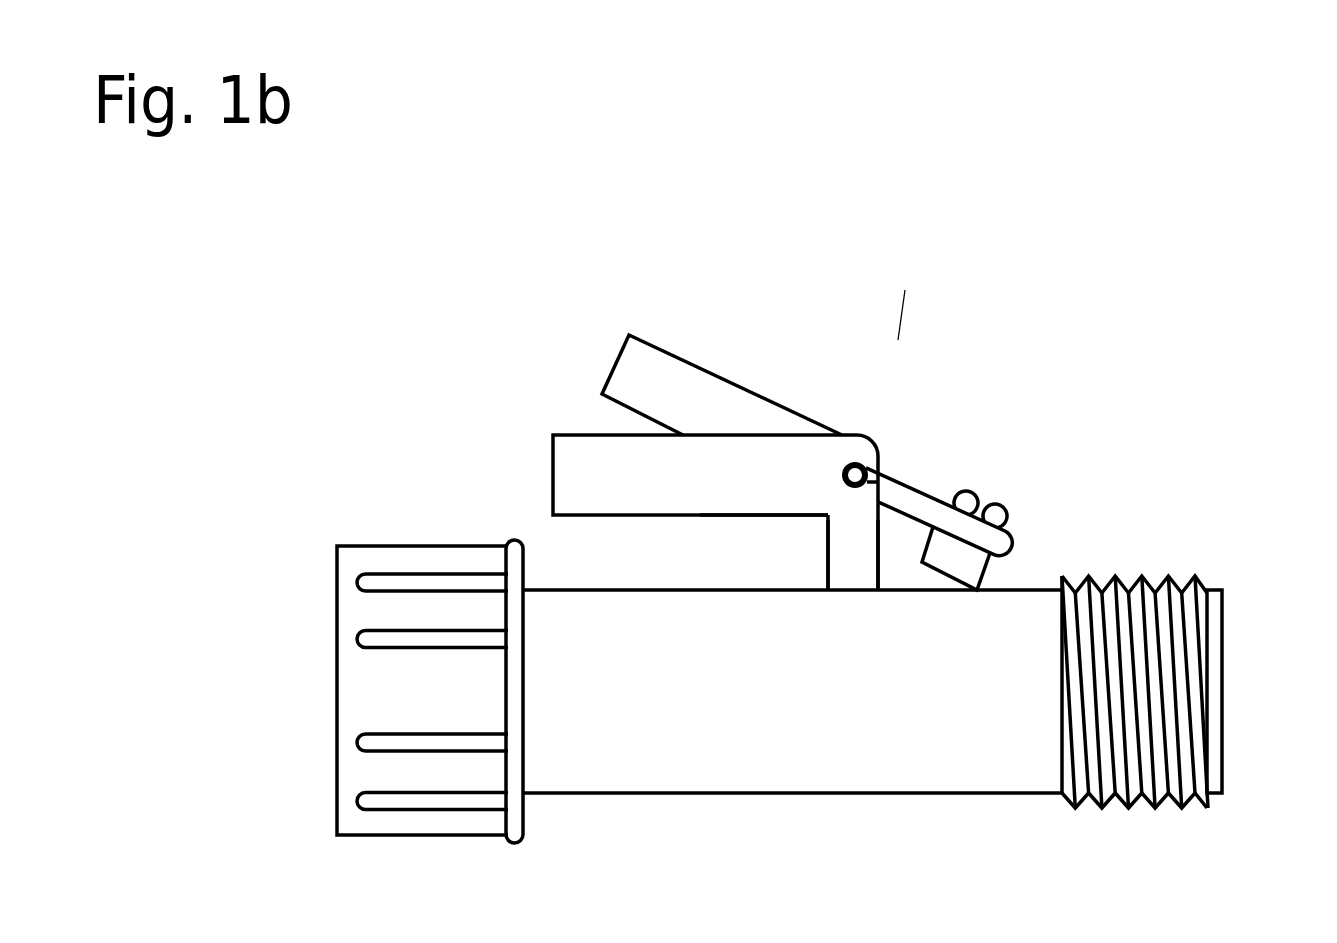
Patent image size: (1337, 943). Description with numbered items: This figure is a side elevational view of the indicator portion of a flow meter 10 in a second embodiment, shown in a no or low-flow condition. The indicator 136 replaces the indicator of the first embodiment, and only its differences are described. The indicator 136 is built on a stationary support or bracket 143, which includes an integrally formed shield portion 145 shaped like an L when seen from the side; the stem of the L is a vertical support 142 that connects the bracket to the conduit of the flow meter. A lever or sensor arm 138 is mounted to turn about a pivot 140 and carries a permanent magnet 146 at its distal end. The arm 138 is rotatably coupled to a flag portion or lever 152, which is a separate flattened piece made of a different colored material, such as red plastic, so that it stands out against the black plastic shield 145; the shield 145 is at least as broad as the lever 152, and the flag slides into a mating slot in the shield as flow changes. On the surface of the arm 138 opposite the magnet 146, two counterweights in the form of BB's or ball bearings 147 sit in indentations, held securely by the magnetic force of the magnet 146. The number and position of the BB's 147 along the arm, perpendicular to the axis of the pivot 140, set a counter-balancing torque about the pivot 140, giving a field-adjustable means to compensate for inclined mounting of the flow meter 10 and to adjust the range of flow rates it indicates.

The flow meter 10 is at (1148, 252).
The indicator 136 is at (898, 343).
The lever or sensor arm 138 is at (912, 498).
The pivot 140 is at (855, 472).
The vertical support 142 is at (848, 532).
The stationary support or bracket 143 is at (710, 525).
The shield portion 145 is at (592, 453).
The permanent magnet 146 is at (975, 575).
The BB's or ball bearings 147 is at (975, 495).
The flag portion or lever 152 is at (695, 385).